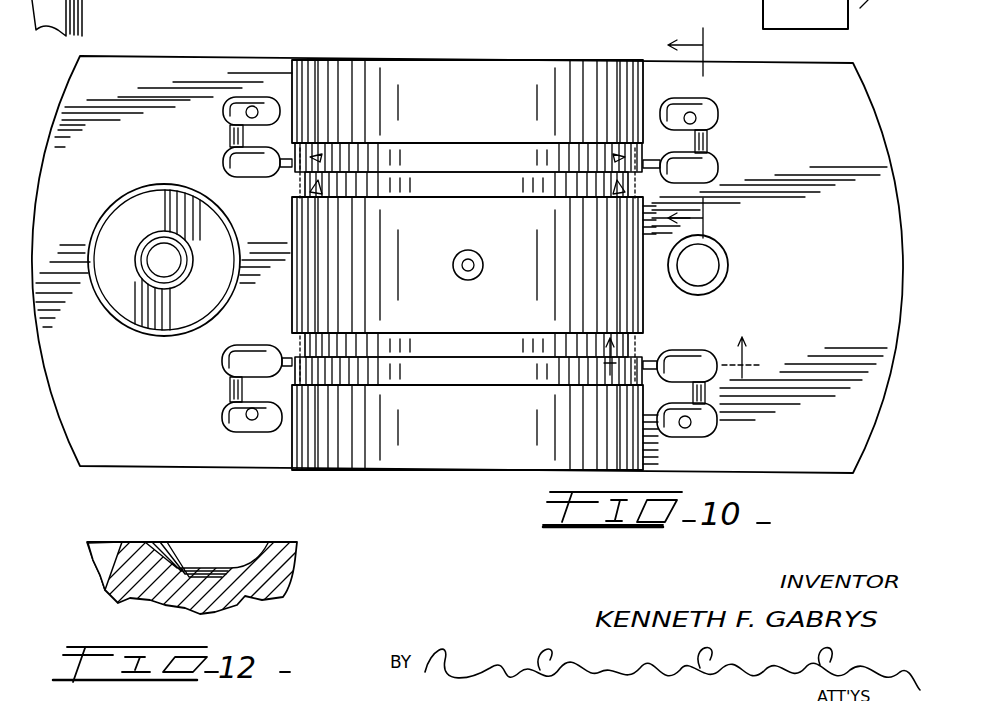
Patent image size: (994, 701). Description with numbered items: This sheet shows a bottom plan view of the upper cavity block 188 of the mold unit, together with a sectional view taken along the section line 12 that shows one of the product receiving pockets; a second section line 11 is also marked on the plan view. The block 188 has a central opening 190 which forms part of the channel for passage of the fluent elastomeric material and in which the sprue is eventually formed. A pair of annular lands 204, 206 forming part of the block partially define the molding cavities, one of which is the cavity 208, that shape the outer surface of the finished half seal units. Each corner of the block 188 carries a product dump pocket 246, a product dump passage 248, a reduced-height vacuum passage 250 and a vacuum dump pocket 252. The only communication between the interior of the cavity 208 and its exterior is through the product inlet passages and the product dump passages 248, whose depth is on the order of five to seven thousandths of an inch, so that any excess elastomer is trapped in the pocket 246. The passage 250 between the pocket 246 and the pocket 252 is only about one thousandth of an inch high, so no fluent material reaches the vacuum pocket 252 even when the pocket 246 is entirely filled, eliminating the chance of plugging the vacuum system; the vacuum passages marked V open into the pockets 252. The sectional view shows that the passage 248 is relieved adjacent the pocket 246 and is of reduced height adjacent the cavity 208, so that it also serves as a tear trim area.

In FIG. 10, the central opening 190 is at (484, 263).
In FIG. 10, the annular land 204 is at (560, 197).
In FIG. 10, the annular land 206 is at (542, 359).
In FIG. 10, the product dump pocket 246 is at (250, 160).
In FIG. 12, the product dump pocket 246 is at (238, 550).
In FIG. 10, the product dump passage 248 is at (287, 167).
In FIG. 12, the product dump passage 248 is at (145, 549).
In FIG. 10, the vacuum passage 250 is at (229, 137).
In FIG. 10, the vacuum dump pocket 252 is at (246, 108).
In FIG. 10, the upper cavity block 188 is at (752, 54).
In FIG. 12, the cavity 208 is at (107, 553).
In FIG. 10, the section line 11- 11 is at (698, 131).
In FIG. 10, the section line 12- 12 is at (679, 360).